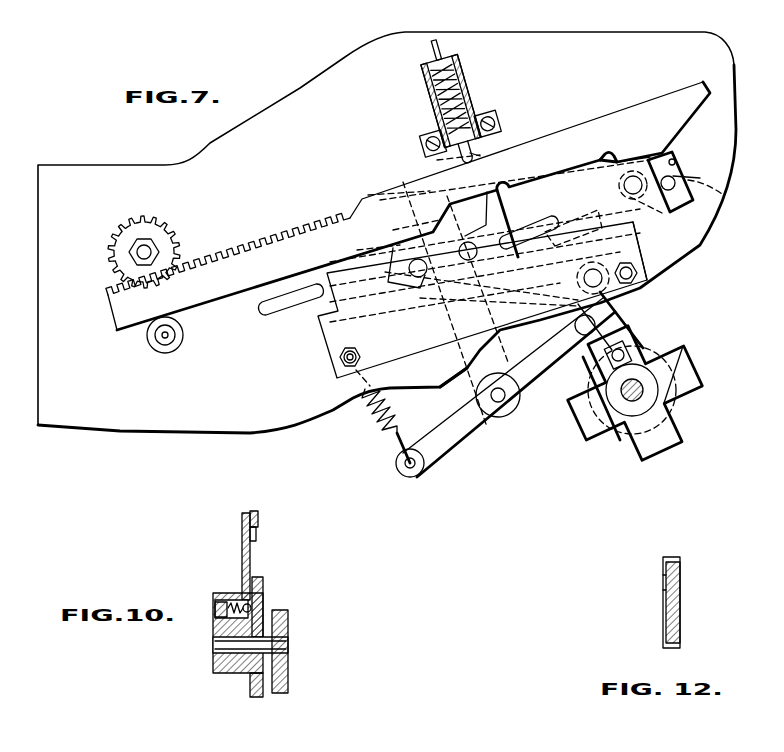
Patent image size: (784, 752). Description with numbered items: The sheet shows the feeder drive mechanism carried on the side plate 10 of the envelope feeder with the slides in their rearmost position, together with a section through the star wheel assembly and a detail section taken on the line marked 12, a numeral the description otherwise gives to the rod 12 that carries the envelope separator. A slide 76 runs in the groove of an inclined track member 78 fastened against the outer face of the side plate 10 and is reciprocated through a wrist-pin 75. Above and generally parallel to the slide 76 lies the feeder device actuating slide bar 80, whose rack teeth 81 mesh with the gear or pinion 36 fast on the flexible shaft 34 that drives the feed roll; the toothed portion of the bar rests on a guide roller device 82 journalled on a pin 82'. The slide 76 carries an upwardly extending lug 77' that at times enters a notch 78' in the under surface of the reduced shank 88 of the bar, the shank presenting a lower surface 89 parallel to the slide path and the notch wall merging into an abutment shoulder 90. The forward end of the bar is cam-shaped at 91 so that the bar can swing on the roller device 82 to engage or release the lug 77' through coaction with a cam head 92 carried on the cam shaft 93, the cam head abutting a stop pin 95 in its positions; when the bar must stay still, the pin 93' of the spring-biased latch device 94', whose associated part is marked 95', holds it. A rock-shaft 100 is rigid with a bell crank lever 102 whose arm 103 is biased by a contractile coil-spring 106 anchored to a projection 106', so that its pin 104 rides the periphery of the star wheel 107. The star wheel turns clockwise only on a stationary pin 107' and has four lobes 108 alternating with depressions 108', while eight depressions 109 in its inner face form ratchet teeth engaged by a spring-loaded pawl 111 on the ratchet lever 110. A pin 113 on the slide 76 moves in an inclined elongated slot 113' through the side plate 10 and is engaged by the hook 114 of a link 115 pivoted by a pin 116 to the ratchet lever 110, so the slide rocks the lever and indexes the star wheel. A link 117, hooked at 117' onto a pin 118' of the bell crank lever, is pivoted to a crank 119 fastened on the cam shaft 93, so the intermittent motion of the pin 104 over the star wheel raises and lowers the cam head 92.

In FIG. 7, the side plate 10 is at (293, 163).
In FIG. 10, the side plate 10 is at (289, 684).
In FIG. 7, the rod 12 is at (584, 363).
In FIG. 7, the flexible shaft 34 is at (138, 252).
In FIG. 7, the gear or pinion 36 is at (160, 231).
In FIG. 7, the wrist-pin 75 is at (476, 244).
In FIG. 7, the slide 76 is at (326, 280).
In FIG. 7, the lug or projection 77' is at (514, 216).
In FIG. 7, the track member 78 is at (626, 269).
In FIG. 7, the notch 78' is at (605, 143).
In FIG. 7, the feeder device actuating slide bar 80 is at (221, 259).
In FIG. 7, the rack teeth 81 is at (272, 240).
In FIG. 7, the guide roller device 82 is at (180, 335).
In FIG. 7, the pin 82' is at (141, 351).
In FIG. 7, the reduced shank 88 is at (531, 164).
In FIG. 7, the lower surface 89 is at (510, 178).
In FIG. 7, the abutment wall or shoulder 90 is at (614, 157).
In FIG. 7, the inclined or cam-shaped forward end 91 is at (690, 115).
In FIG. 7, the cam head 92 is at (675, 168).
In FIG. 7, the cam shaft 93 is at (712, 174).
In FIG. 7, the pin of latch device 93' is at (438, 162).
In FIG. 7, the spring-biased latch device 94' is at (451, 101).
In FIG. 7, the stop pin 95 is at (688, 146).
In FIG. 7, the spring plunger 95' is at (503, 136).
In FIG. 7, the rock-shaft 100 is at (498, 403).
In FIG. 7, the bell crank lever 102 is at (464, 382).
In FIG. 7, the arm 103 is at (547, 370).
In FIG. 7, the pin 104 is at (580, 314).
In FIG. 7, the contractile coil-spring 106 is at (369, 426).
In FIG. 7, the projection 106' is at (397, 476).
In FIG. 7, the star wheel 107 is at (654, 405).
In FIG. 10, the star wheel 107 is at (272, 631).
In FIG. 12, the star wheel 107 is at (694, 602).
In FIG. 7, the stationary pin or shaft 107' is at (672, 407).
In FIG. 10, the stationary pin or shaft 107' is at (274, 635).
In FIG. 7, the peripheral lobes 108 is at (635, 405).
In FIG. 7, the depressions 108' is at (709, 378).
In FIG. 10, the depressions forming ratchet teeth 109 is at (258, 580).
In FIG. 12, the depressions forming ratchet teeth 109 is at (665, 608).
In FIG. 7, the ratchet lever 110 is at (622, 317).
In FIG. 10, the ratchet lever 110 is at (241, 560).
In FIG. 7, the spring-loaded pawl 111 is at (647, 347).
In FIG. 10, the spring-loaded pawl 111 is at (250, 606).
In FIG. 7, the pin 113 is at (448, 304).
In FIG. 7, the inclined elongated slot 113' is at (290, 316).
In FIG. 7, the hook 114 is at (357, 250).
In FIG. 10, the link 115 is at (258, 512).
In FIG. 7, the pin 116 is at (634, 246).
In FIG. 10, the pin 116 is at (257, 530).
In FIG. 7, the link 117 is at (574, 226).
In FIG. 7, the hook end 117' is at (374, 192).
In FIG. 7, the pin 118' is at (396, 232).
In FIG. 7, the crank 119 is at (728, 193).